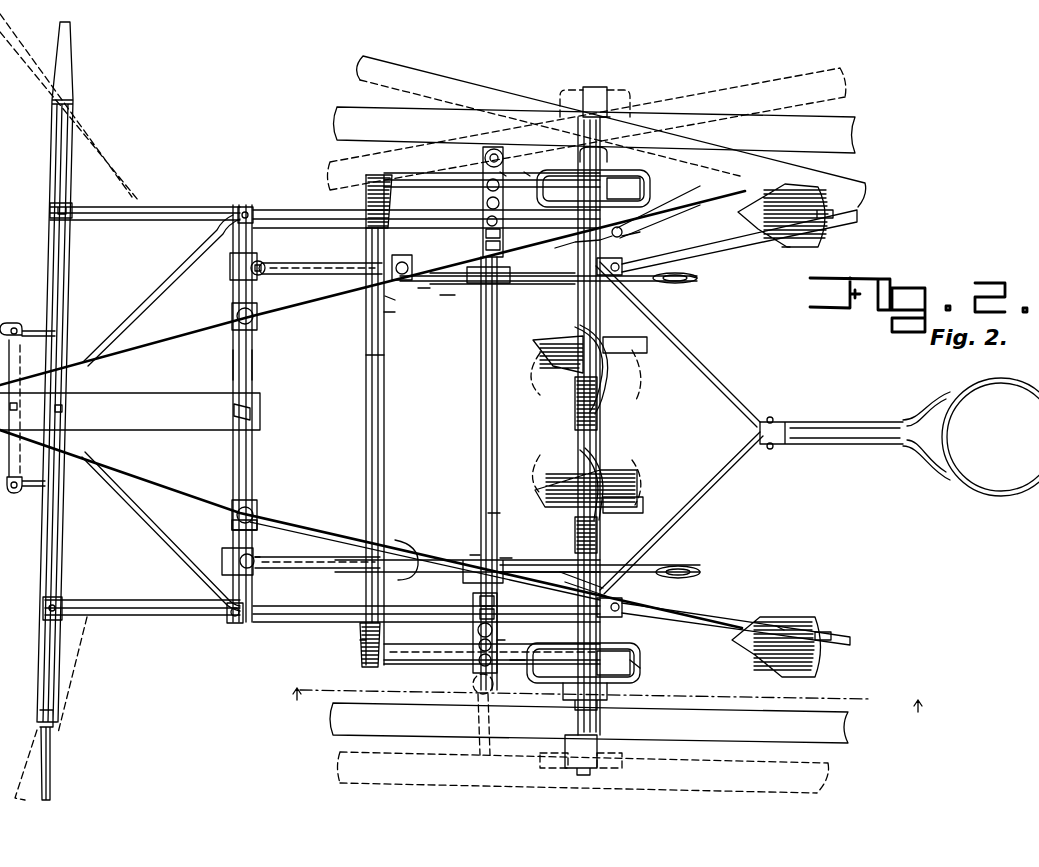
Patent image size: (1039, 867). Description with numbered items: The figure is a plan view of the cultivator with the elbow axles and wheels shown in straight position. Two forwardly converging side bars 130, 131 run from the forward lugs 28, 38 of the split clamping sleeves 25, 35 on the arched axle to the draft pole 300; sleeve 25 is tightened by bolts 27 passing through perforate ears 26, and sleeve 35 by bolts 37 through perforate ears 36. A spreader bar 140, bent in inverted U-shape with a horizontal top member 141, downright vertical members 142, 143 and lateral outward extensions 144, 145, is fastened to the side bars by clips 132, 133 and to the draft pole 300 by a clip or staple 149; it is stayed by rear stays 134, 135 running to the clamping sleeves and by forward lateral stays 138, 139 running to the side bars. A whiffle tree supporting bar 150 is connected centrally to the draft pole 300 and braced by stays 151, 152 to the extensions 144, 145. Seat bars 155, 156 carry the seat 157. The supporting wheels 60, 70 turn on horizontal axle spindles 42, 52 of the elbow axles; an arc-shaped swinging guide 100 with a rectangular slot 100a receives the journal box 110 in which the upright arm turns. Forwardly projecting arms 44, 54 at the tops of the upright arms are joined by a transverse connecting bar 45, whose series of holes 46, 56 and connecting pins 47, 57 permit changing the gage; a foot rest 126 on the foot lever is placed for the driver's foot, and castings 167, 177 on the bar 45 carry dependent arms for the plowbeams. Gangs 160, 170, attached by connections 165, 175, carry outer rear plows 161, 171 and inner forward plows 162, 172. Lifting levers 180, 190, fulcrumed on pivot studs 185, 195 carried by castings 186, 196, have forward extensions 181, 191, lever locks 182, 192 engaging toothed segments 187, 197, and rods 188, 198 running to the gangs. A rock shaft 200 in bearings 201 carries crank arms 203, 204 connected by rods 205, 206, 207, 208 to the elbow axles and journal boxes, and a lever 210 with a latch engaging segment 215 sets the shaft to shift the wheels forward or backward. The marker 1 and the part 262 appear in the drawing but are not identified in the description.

The whiffle tree supporting bar 150 is at (48, 524).
The draft pole 300 is at (130, 411).
The stay 152 is at (160, 210).
The stay 151 is at (135, 616).
The spreader bar 140 is at (252, 470).
The horizontal top member 141 is at (252, 368).
The lateral outward extension 145 is at (246, 207).
The downright vertical member 143 is at (232, 272).
The clip 133 is at (234, 314).
The clip 132 is at (237, 505).
The downright vertical member 142 is at (233, 516).
The gang connection 165 is at (250, 574).
The clip or staple 149 is at (234, 408).
The gang connection 175 is at (292, 263).
The forward extension 181 is at (430, 572).
The forward lateral stay 139 is at (160, 289).
The forward lateral stay 138 is at (146, 518).
The side bar 131 is at (300, 306).
The side bar 130 is at (296, 526).
The bearing 201 is at (350, 543).
The rear stay 135 is at (286, 211).
The crank arm 204 is at (366, 206).
The rear stay 134 is at (294, 623).
The lateral outward extension 144 is at (232, 624).
The rock shaft 200 is at (366, 416).
The segment 215 is at (367, 356).
The fitting 262 is at (376, 315).
The crank arm 203 is at (360, 641).
The rod 208 is at (416, 179).
The rod 206 is at (402, 648).
The rod 205 is at (395, 662).
The rod 207 is at (443, 175).
The arc-shaped swinging guide 100 is at (748, 668).
The supporting wheel 70 is at (830, 130).
The rectangular slot 100a is at (660, 775).
The supporting wheel 60 is at (828, 717).
The section line 1 is at (290, 688).
The series of holes 56 is at (483, 180).
The connecting pin 57 is at (503, 175).
The forwardly projecting arm 54 is at (527, 175).
The transverse connecting bar 45 is at (472, 473).
The casting 196 is at (470, 268).
The toothed segment 197 is at (512, 285).
The lifting lever 190 is at (645, 283).
The lever lock 192 is at (697, 281).
The rod 198 is at (403, 261).
The casting 177 is at (448, 297).
The pivot stud 195 is at (422, 290).
The forward extension 191 is at (388, 300).
The forward lug 38 is at (563, 253).
The series of holes 46 is at (473, 627).
The connecting pin 47 is at (480, 675).
The forwardly projecting arm 44 is at (517, 662).
The pivot stud 185 is at (450, 553).
The casting 186 is at (477, 553).
The rod 188 is at (437, 537).
The toothed segment 187 is at (504, 560).
The lifting lever 180 is at (637, 569).
The lever lock 182 is at (700, 574).
The casting 167 is at (494, 514).
The forward lug 28 is at (495, 624).
The horizontal axle spindle 52 is at (598, 87).
The horizontal axle spindle 42 is at (585, 771).
The journal box 110 is at (624, 186).
The split clamping sleeve 35 is at (640, 194).
The bolts 37 is at (622, 224).
The perforate ears 36 is at (620, 234).
The gang 170 is at (774, 218).
The outer rear plow 171 is at (781, 247).
The perforate ears 26 is at (665, 614).
The bolts 27 is at (605, 592).
The split clamping sleeve 25 is at (640, 670).
The gang 160 is at (773, 638).
The outer rear plow 161 is at (781, 628).
The seat bar 156 is at (698, 357).
The seat bar 155 is at (706, 486).
The seat 157 is at (960, 403).
The lever 210 is at (545, 350).
The foot rest 126 is at (583, 390).
The inner forward plow 172 is at (620, 395).
The inner forward plow 162 is at (605, 468).